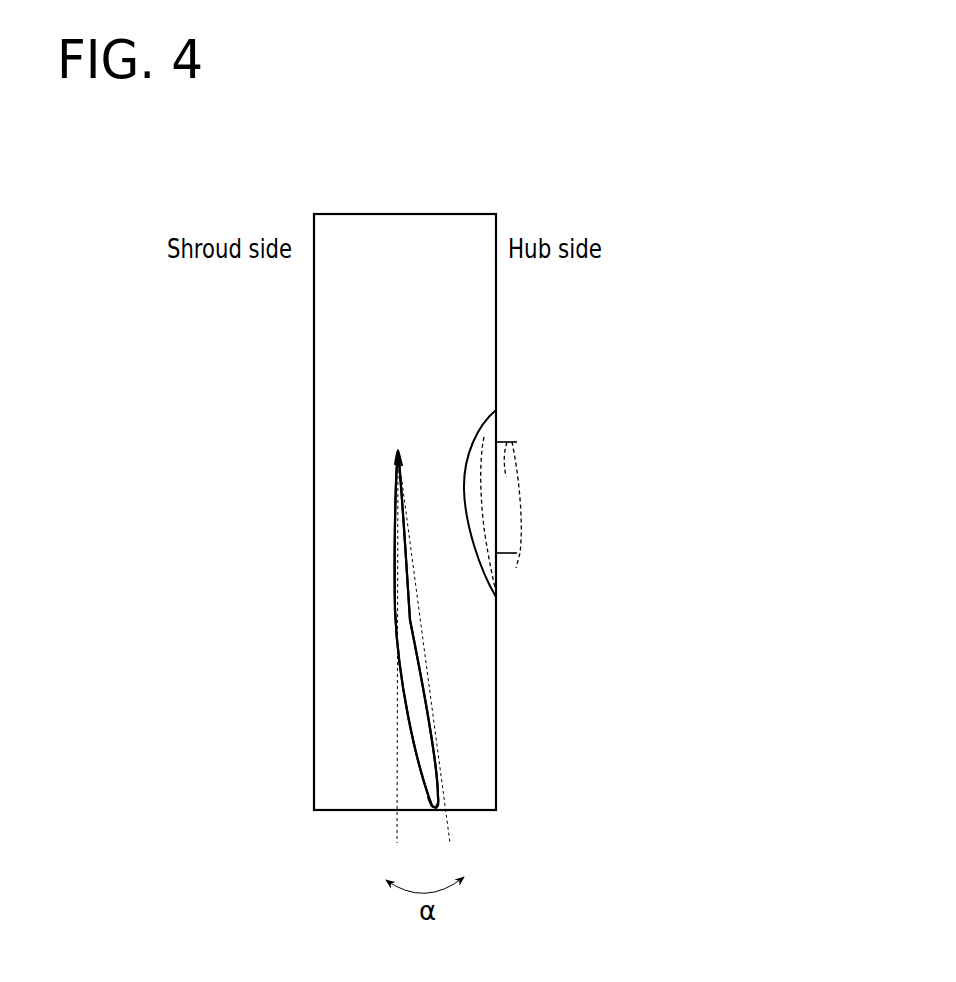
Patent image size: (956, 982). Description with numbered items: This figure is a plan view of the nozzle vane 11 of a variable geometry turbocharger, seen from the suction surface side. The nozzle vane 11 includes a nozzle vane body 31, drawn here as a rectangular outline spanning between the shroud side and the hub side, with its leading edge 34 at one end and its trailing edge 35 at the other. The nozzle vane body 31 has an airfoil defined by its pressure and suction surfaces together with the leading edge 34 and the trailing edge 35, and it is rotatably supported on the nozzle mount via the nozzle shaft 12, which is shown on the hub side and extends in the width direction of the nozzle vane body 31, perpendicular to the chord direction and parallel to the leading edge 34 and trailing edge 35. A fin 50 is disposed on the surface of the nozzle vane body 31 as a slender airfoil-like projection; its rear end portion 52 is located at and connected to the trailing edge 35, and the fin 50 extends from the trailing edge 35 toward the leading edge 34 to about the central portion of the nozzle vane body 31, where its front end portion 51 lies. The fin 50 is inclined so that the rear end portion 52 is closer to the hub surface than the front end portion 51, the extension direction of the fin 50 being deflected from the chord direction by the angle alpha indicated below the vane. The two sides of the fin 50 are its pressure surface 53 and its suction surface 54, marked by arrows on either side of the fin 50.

The nozzle vane 11 is at (703, 259).
The nozzle shaft 12 is at (508, 441).
The nozzle vane body 31 is at (408, 252).
The leading edge 34 is at (481, 213).
The trailing edge 35 is at (474, 810).
The fin 50 is at (396, 622).
The front end portion 51 is at (398, 449).
The rear end portion 52 is at (435, 811).
The pressure surface 53 is at (425, 677).
The suction surface 54 is at (387, 673).